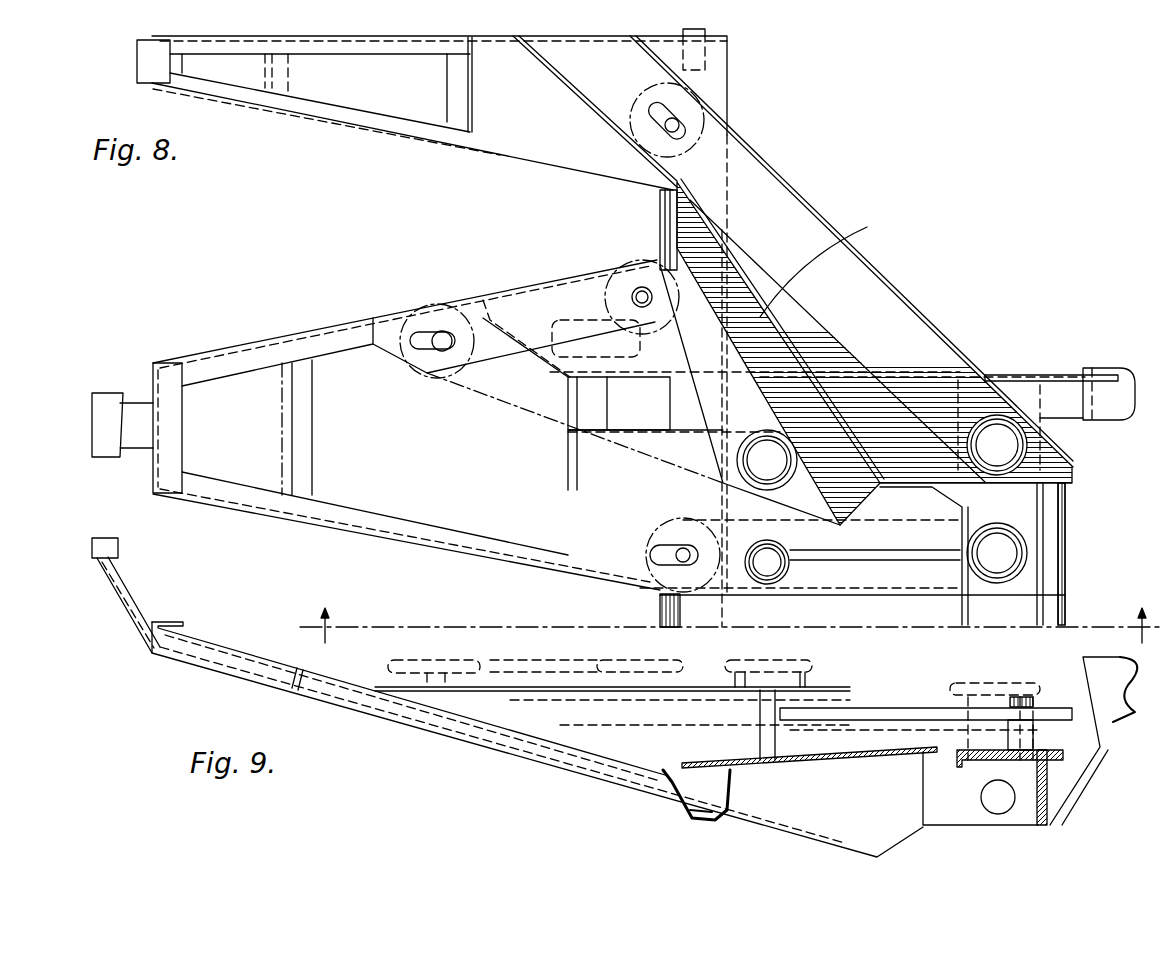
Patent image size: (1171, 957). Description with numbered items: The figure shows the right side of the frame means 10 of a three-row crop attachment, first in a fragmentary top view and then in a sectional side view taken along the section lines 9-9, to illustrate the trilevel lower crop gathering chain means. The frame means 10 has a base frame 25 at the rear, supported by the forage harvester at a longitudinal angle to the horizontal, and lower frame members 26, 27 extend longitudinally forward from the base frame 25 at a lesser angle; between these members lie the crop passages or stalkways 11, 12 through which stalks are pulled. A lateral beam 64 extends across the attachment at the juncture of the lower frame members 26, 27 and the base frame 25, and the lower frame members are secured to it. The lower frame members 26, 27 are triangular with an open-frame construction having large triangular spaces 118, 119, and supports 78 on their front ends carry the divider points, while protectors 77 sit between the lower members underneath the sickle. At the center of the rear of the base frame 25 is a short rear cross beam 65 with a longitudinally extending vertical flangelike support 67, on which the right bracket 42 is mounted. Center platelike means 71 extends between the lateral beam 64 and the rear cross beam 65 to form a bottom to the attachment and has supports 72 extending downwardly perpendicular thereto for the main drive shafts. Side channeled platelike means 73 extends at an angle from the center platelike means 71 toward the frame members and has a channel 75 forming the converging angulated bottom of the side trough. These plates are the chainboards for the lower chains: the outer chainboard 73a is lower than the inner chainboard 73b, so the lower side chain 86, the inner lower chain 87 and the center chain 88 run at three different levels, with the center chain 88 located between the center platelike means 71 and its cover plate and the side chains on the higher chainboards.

In FIG. 8, the section lines 9- 9 is at (730, 610).
In FIG. 9, the frame means 10 is at (495, 790).
In FIG. 8, the crop passage 11 is at (150, 237).
In FIG. 8, the crop passage 12 is at (278, 562).
In FIG. 8, the base frame 25 is at (793, 280).
In FIG. 9, the base frame 25 is at (920, 832).
In FIG. 8, the lower frame member 26 is at (415, 135).
In FIG. 8, the lower frame member 27 is at (340, 295).
In FIG. 9, the lower frame member 27 is at (362, 712).
In FIG. 8, the right bracket 42 is at (1123, 370).
In FIG. 9, the right bracket 42 is at (1120, 720).
In FIG. 8, the lateral beam 64 is at (727, 95).
In FIG. 9, the lateral beam 64 is at (725, 822).
In FIG. 8, the rear cross beam 65 is at (1038, 417).
In FIG. 9, the rear cross beam 65 is at (1045, 790).
In FIG. 8, the flangelike support 67 is at (987, 377).
In FIG. 9, the flangelike support 67 is at (1083, 665).
In FIG. 9, the center platelike means 71 is at (810, 760).
In FIG. 9, the support 72 is at (807, 842).
In FIG. 8, the side channeled platelike means 73 is at (920, 317).
In FIG. 8, the outer chainboard 73a is at (763, 183).
In FIG. 8, the inner chainboard 73b is at (556, 292).
In FIG. 8, the channel 75 is at (870, 225).
In FIG. 8, the protector 77 is at (660, 222).
In FIG. 9, the protector 77 is at (665, 790).
In FIG. 8, the support 78 is at (148, 62).
In FIG. 9, the support 78 is at (135, 612).
In FIG. 9, the lower side chain 86 is at (900, 685).
In FIG. 9, the inner lower chain 87 is at (572, 660).
In FIG. 9, the center chain 88 is at (910, 735).
In FIG. 8, the triangular space 118 is at (343, 100).
In FIG. 8, the triangular space 119 is at (440, 507).